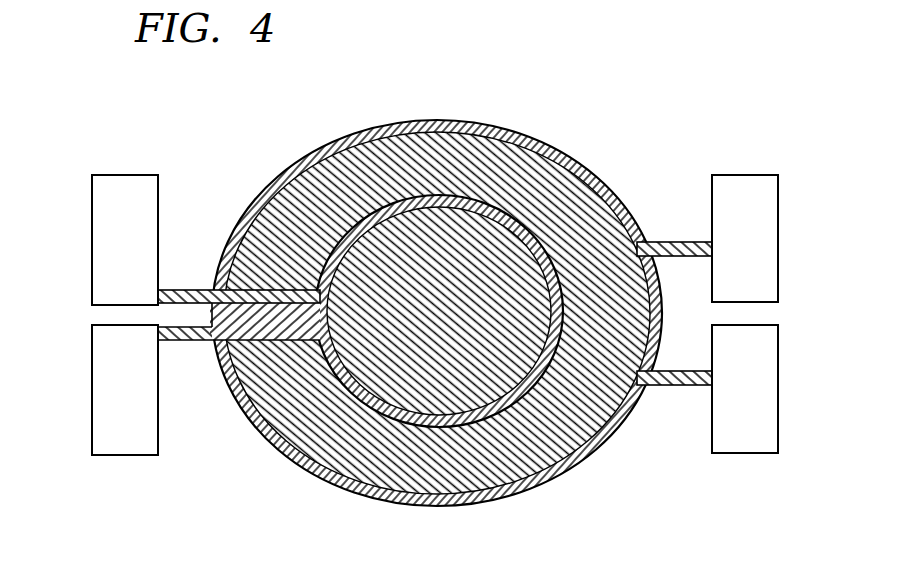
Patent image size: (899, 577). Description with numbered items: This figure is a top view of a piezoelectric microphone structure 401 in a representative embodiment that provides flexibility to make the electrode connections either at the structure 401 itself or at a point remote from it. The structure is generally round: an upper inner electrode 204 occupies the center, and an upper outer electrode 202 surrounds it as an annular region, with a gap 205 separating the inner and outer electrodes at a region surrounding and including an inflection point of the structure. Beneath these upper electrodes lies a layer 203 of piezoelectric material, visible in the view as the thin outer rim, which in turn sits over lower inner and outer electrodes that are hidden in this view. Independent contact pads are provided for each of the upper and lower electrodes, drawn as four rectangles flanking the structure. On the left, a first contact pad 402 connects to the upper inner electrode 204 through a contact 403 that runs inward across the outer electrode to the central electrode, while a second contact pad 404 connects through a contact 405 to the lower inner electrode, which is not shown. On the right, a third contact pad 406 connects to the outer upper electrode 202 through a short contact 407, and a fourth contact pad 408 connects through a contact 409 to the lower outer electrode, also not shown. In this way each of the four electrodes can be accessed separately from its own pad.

The microphone structure 401 is at (506, 285).
The upper outer electrode 202 is at (455, 146).
The layer of piezoelectric material 203 is at (558, 160).
The upper inner electrode 204 is at (430, 396).
The gap 205 is at (356, 194).
The first contact pad 402 is at (92, 239).
The contact 403 is at (192, 290).
The second contact pad 404 is at (92, 389).
The contact 405 is at (180, 343).
The third contact pad 406 is at (778, 241).
The contact 407 is at (680, 242).
The fourth contact pad 408 is at (778, 386).
The contact 409 is at (675, 388).